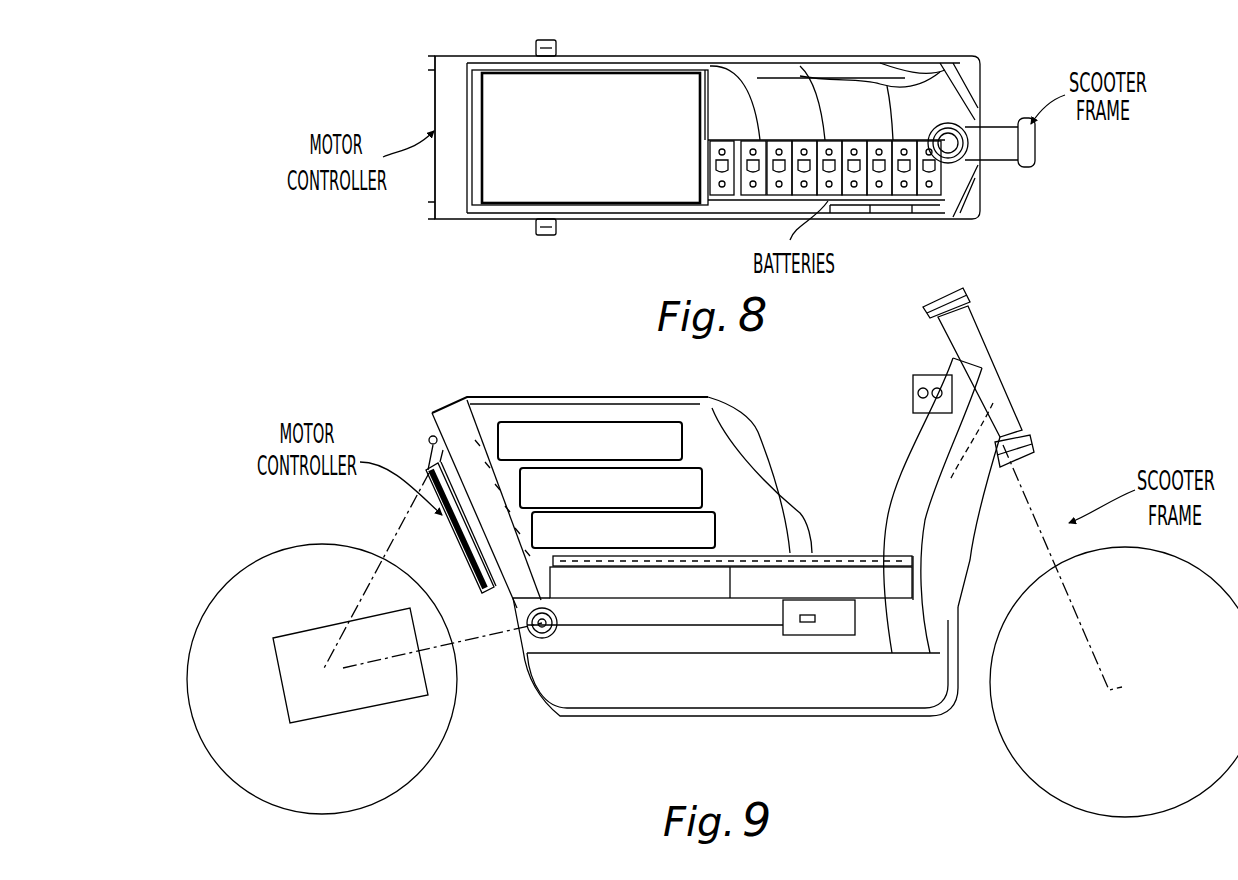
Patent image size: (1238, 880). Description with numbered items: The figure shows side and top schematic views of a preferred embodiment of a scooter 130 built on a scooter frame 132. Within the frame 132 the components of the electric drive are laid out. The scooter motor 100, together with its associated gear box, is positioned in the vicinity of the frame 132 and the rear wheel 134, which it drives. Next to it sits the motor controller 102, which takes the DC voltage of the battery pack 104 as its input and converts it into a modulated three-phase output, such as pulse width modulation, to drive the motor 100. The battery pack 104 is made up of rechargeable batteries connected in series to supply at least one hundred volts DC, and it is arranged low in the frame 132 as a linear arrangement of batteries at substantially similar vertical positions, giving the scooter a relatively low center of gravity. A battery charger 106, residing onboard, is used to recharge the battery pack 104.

In FIG. 9, the motor 100 is at (322, 636).
In FIG. 9, the motor controller 102 is at (422, 468).
In FIG. 8, the battery pack 104 is at (757, 196).
In FIG. 9, the battery pack 104 is at (765, 577).
In FIG. 8, the battery charger 106 is at (865, 218).
In FIG. 9, the battery charger 106 is at (855, 632).
In FIG. 9, the scooter 130 is at (1077, 382).
In FIG. 8, the scooter frame 132 is at (975, 82).
In FIG. 9, the scooter frame 132 is at (1020, 464).
In FIG. 9, the rear wheel 134 is at (200, 617).